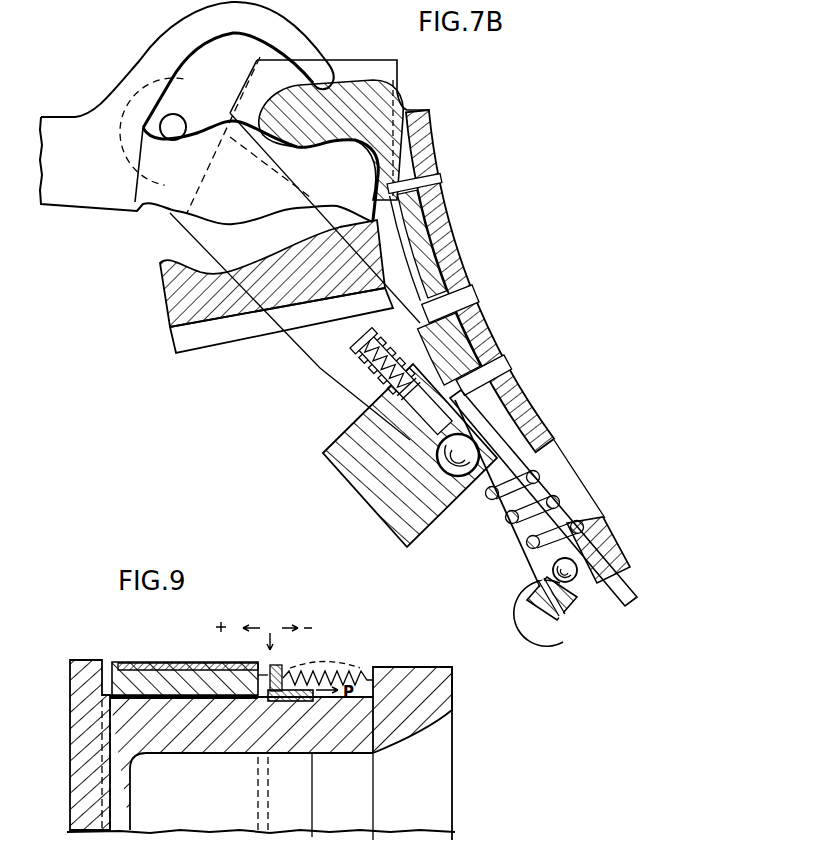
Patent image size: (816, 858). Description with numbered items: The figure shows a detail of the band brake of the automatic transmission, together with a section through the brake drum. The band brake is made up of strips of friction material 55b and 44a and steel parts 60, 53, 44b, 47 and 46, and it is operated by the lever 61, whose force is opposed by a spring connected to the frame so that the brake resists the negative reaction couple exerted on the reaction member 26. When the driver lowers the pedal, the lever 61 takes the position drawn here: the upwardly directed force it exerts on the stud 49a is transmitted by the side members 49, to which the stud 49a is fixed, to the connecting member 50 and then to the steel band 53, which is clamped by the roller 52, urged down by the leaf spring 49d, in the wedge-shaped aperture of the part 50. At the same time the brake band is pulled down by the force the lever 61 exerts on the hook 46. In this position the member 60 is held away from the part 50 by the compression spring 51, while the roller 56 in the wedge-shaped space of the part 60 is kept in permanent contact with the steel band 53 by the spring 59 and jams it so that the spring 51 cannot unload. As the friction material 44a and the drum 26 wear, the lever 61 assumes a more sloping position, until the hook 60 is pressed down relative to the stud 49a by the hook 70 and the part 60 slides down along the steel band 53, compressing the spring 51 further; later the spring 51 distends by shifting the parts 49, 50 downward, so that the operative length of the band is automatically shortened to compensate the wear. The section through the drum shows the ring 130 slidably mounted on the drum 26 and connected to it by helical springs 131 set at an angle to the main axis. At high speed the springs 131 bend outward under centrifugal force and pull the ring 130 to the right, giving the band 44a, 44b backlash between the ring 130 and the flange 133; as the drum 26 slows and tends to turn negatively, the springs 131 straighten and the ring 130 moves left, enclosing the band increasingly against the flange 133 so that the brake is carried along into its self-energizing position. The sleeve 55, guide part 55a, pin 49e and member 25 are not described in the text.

In FIG. 7B, the hook 70 is at (165, 53).
In FIG. 7B, the lever 61 is at (90, 195).
In FIG. 7B, the stud 49a is at (171, 141).
In FIG. 7B, the steel part of band brake 47 is at (248, 90).
In FIG. 7B, the member (hook) 60 is at (365, 84).
In FIG. 7B, the strip of friction material 55b is at (432, 137).
In FIG. 7B, the guide sleeve 55 is at (412, 210).
In FIG. 7B, the hook 46 is at (170, 297).
In FIG. 7B, the side members 49 is at (340, 383).
In FIG. 7B, the spring 59 is at (377, 374).
In FIG. 7B, the roller 56 is at (420, 462).
In FIG. 7B, the steel band 53 is at (630, 605).
In FIG. 7B, the housing lower portion 55a is at (473, 482).
In FIG. 7B, the compression spring 51 is at (537, 503).
In FIG. 7B, the roller 52 is at (582, 540).
In FIG. 7B, the leaf spring 49d is at (520, 602).
In FIG. 7B, the connecting member 50 is at (547, 630).
In FIG. 7B, the rod pin 49e is at (592, 595).
In FIG. 9, the flange 133 is at (88, 680).
In FIG. 9, the reaction member (brake drum) 26 is at (215, 750).
In FIG. 9, the end block 25 is at (412, 722).
In FIG. 9, the strip of friction material 44a is at (125, 665).
In FIG. 9, the steel part of brake band 44b is at (172, 663).
In FIG. 9, the ring 130 is at (280, 666).
In FIG. 9, the helical springs 131 is at (340, 670).